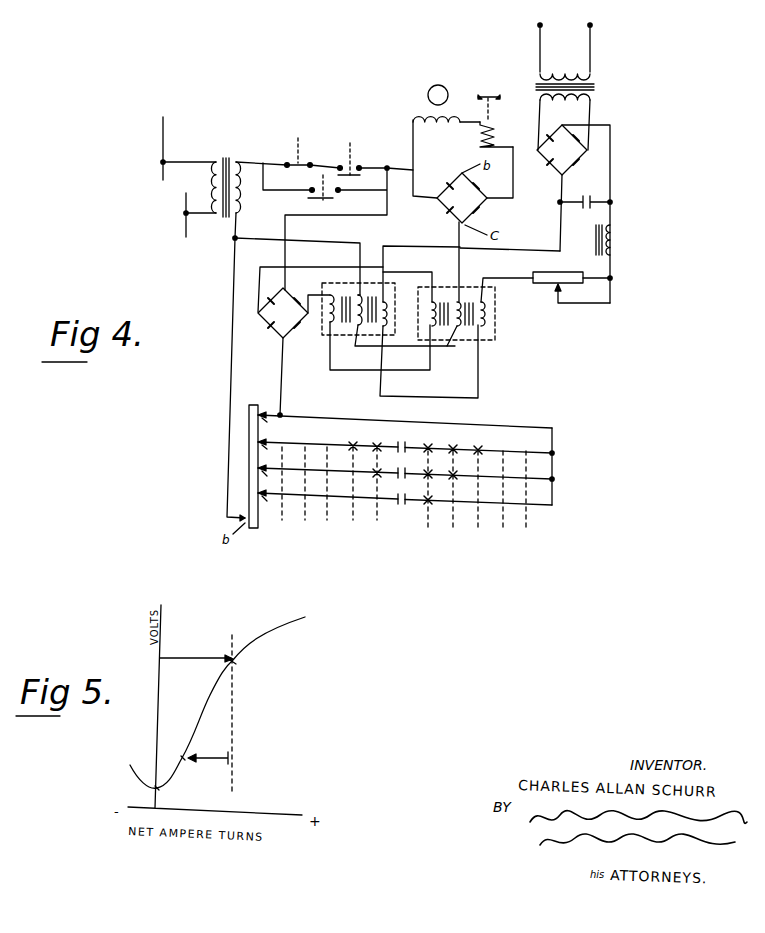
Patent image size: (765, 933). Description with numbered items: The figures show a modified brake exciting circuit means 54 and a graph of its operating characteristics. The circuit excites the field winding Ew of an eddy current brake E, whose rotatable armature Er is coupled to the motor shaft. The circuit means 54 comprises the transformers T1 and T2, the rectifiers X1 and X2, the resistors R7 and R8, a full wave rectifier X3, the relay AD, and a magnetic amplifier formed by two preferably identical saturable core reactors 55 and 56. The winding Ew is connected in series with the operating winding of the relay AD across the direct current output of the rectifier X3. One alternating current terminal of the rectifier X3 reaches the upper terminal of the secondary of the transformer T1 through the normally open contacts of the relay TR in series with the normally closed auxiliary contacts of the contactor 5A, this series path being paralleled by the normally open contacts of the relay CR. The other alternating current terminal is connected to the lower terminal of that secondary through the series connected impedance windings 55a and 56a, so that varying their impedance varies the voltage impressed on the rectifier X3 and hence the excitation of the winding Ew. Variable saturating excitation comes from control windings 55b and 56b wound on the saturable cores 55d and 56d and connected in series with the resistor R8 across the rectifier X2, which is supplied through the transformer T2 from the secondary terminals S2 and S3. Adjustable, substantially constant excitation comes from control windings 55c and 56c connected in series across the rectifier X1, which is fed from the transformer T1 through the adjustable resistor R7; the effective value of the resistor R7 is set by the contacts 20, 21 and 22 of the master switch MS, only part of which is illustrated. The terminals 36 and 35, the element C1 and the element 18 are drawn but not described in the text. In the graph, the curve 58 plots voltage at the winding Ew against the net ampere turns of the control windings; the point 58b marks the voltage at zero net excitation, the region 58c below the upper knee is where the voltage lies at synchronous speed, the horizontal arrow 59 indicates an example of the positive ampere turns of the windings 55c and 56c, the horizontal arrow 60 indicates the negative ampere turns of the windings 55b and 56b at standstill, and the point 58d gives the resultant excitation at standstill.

In FIG. 4, the AC supply terminal 36 is at (160, 139).
In FIG. 4, the AC supply terminal 35 is at (183, 226).
In FIG. 4, the transformer T1 is at (223, 156).
In FIG. 4, the contactor 5A is at (295, 145).
In FIG. 4, the relay TR is at (350, 150).
In FIG. 4, the relay CR is at (327, 196).
In FIG. 4, the rectifier X1 is at (276, 337).
In FIG. 4, the rectifier X2 is at (557, 177).
In FIG. 4, the full wave rectifier X3 is at (480, 203).
In FIG. 4, the brake exciting circuit means 54 is at (425, 231).
In FIG. 4, the saturable core reactor 55 is at (320, 338).
In FIG. 4, the impedance winding 55a is at (355, 292).
In FIG. 4, the control winding 55b is at (398, 292).
In FIG. 4, the control winding 55c is at (321, 283).
In FIG. 4, the saturable core 55d is at (363, 331).
In FIG. 4, the saturable core reactor 56 is at (497, 344).
In FIG. 4, the impedance winding 56a is at (462, 297).
In FIG. 4, the control winding 56b is at (487, 313).
In FIG. 4, the control winding 56c is at (432, 320).
In FIG. 4, the saturable core 56d is at (467, 330).
In FIG. 4, the field winding EW is at (446, 135).
In FIG. 4, the relay AD is at (497, 129).
In FIG. 4, the rotatable armature Er is at (444, 78).
In FIG. 4, the eddy current brake E is at (389, 97).
In FIG. 4, the transformer T2 is at (593, 88).
In FIG. 4, the secondary terminal S2 is at (538, 27).
In FIG. 4, the secondary terminal S3 is at (592, 28).
In FIG. 4, the capacitor C1 is at (578, 200).
In FIG. 4, the field winding 18 is at (594, 238).
In FIG. 4, the resistor R8 is at (560, 270).
In FIG. 4, the adjustable resistor R7 is at (249, 455).
In FIG. 4, the master switch MS is at (458, 554).
In FIG. 4, the contact 20 is at (400, 454).
In FIG. 4, the contact 21 is at (400, 480).
In FIG. 4, the contact 22 is at (400, 506).
In FIG. 5, the curve 58 is at (212, 699).
In FIG. 5, the point 58b is at (158, 790).
In FIG. 5, the region 58c is at (236, 662).
In FIG. 5, the point 58d is at (183, 758).
In FIG. 5, the horizontal arrow 59 is at (187, 658).
In FIG. 5, the horizontal arrow 60 is at (205, 760).